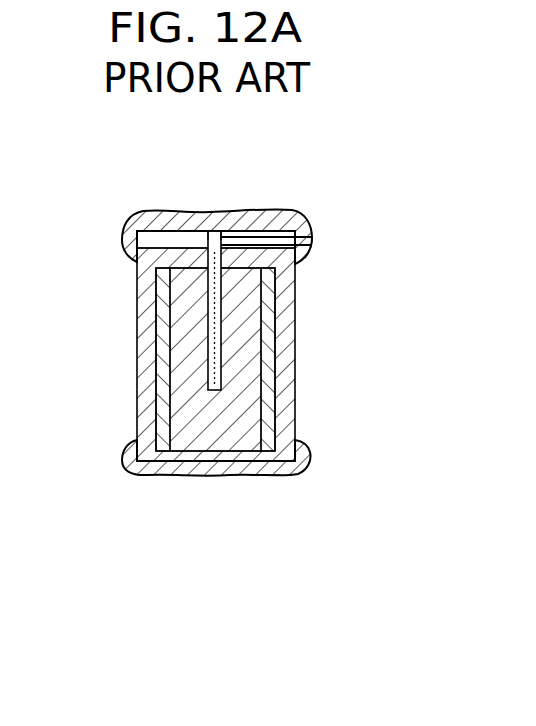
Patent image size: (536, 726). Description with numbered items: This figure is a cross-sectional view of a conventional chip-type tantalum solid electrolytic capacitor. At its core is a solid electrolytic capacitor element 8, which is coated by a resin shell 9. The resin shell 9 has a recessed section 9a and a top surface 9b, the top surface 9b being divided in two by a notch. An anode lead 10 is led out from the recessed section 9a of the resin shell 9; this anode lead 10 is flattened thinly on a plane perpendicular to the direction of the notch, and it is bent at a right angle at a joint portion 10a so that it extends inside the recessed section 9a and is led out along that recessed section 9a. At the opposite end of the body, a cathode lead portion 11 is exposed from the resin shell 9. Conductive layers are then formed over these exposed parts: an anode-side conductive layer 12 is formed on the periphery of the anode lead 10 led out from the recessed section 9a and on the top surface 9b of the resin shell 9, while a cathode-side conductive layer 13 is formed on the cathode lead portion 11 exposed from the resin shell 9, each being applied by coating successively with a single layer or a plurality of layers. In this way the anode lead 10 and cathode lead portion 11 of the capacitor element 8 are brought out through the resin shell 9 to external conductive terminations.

The solid electrolytic capacitor element 8 is at (250, 421).
The resin shell 9 is at (284, 323).
The recessed section 9a is at (308, 254).
The top surface 9b is at (160, 213).
The anode lead 10 is at (222, 372).
The joint portion 10a is at (216, 232).
The cathode lead portion 11 is at (267, 477).
The anode-side conductive layer 12 is at (277, 212).
The cathode-side conductive layer 13 is at (157, 477).